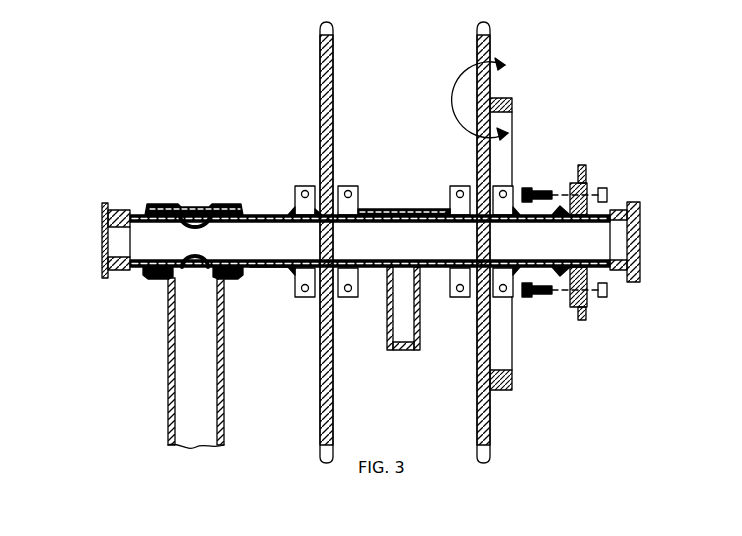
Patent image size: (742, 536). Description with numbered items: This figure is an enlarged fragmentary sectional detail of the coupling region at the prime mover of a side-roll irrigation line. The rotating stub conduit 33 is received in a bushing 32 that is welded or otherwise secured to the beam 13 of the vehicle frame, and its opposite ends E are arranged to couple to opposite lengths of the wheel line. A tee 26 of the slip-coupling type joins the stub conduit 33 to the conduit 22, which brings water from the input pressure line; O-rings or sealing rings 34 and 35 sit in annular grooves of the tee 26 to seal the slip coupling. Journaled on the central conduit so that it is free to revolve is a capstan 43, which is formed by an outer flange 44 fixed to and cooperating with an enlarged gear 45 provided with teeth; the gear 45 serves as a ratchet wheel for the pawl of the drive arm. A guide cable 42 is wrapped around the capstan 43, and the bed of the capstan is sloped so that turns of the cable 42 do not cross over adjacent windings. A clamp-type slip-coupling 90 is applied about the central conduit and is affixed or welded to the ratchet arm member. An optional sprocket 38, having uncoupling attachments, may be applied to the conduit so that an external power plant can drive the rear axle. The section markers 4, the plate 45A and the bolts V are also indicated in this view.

The bushing 32 is at (404, 209).
The opposite ends E is at (103, 207).
The tee 26 is at (190, 205).
The sealing ring 34 is at (152, 281).
The sealing ring 35 is at (225, 281).
The rotating stub conduit 33 is at (272, 270).
The conduit 22 is at (225, 413).
The support plate 45A is at (320, 99).
The gear 45 is at (477, 391).
The clamp-type slip-coupling 90 is at (302, 205).
The beam 13 is at (420, 320).
The capstan 43 is at (512, 104).
The guide cable 42 is at (496, 100).
The outer flange 44 is at (512, 378).
The section line 4- 4 is at (492, 102).
The sprocket 38 is at (590, 300).
The bolt V is at (530, 299).